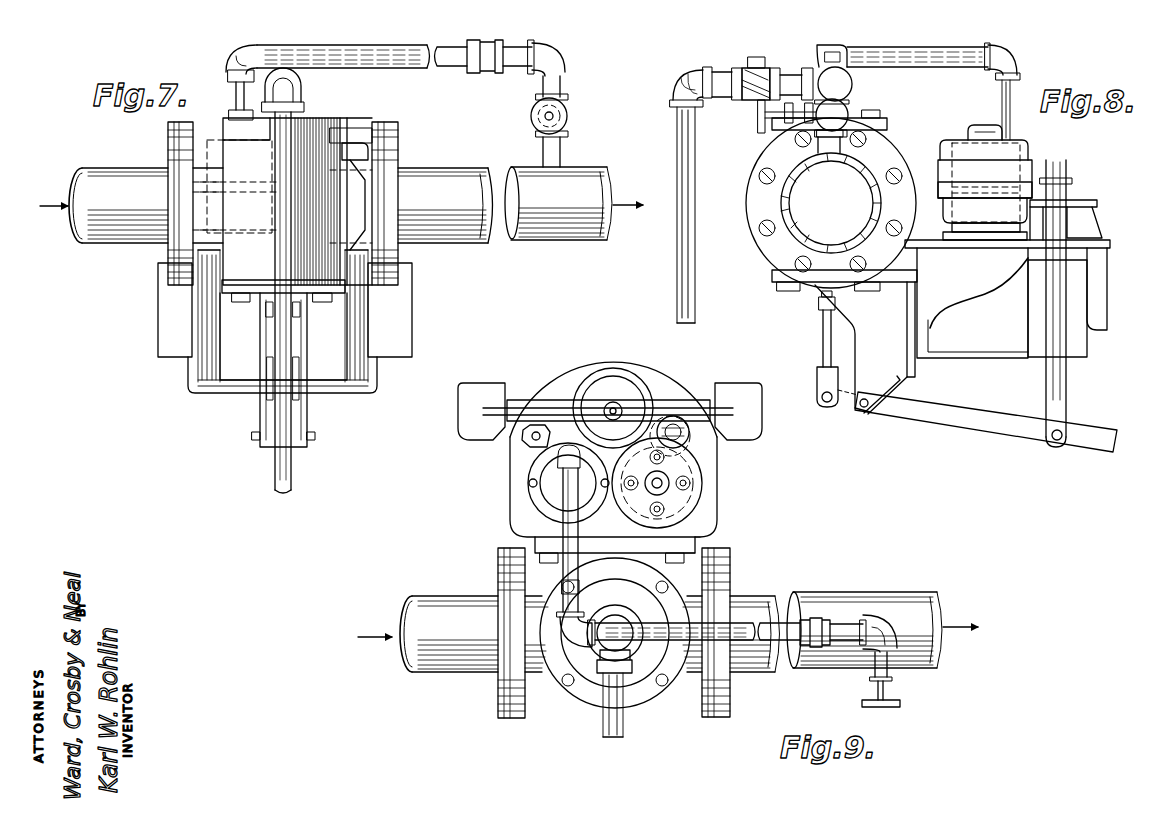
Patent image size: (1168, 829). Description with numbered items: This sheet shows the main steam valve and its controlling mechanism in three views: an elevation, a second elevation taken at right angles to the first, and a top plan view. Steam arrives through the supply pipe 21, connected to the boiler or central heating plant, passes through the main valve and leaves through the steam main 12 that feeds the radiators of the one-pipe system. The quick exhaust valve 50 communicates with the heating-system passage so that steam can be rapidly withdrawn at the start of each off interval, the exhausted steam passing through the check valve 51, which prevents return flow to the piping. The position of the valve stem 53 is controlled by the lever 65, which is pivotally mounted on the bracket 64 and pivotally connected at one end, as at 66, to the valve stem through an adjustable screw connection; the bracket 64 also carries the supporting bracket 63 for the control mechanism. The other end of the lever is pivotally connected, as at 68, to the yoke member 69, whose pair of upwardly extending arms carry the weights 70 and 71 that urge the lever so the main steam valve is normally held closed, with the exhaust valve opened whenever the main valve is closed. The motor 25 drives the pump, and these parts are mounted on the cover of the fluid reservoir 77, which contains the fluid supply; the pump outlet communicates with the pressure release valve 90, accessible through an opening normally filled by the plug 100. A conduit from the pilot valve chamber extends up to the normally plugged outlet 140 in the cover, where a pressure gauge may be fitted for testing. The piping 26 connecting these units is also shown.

In FIG. 7, the steam main 12 is at (590, 168).
In FIG. 8, the steam main 12 is at (794, 224).
In FIG. 9, the steam main 12 is at (879, 592).
In FIG. 7, the supply pipe 21 is at (122, 167).
In FIG. 9, the supply pipe 21 is at (446, 598).
In FIG. 7, the motor 25 is at (350, 146).
In FIG. 8, the motor 25 is at (950, 141).
In FIG. 7, the pressure pipe 26 is at (410, 70).
In FIG. 8, the pressure pipe 26 is at (931, 63).
In FIG. 9, the pressure pipe 26 is at (747, 623).
In FIG. 8, the quick exhaust valve 50 is at (857, 86).
In FIG. 9, the quick exhaust valve 50 is at (595, 655).
In FIG. 8, the check valve 51 is at (744, 68).
In FIG. 8, the valve stem 53 is at (826, 339).
In FIG. 8, the supporting bracket 63 is at (906, 318).
In FIG. 9, the supporting bracket 63 is at (708, 535).
In FIG. 8, the bracket 64 is at (898, 389).
In FIG. 9, the bracket 64 is at (700, 554).
In FIG. 8, the lever 65 is at (963, 416).
In FIG. 8, the pivotal connection 66 is at (827, 402).
In FIG. 8, the pivotal connection 68 is at (1059, 442).
In FIG. 7, the yoke member 69 is at (192, 370).
In FIG. 8, the yoke member 69 is at (1067, 178).
In FIG. 9, the yoke member 69 is at (515, 401).
In FIG. 7, the weight 70 is at (160, 338).
In FIG. 9, the weight 70 is at (475, 387).
In FIG. 7, the weight 71 is at (398, 322).
In FIG. 8, the weight 71 is at (1082, 346).
In FIG. 9, the weight 71 is at (737, 387).
In FIG. 8, the fluid reservoir 77 is at (1097, 299).
In FIG. 9, the pressure release valve 90 is at (690, 440).
In FIG. 9, the plug 100 is at (675, 418).
In FIG. 9, the normally plugged outlet 140 is at (521, 441).